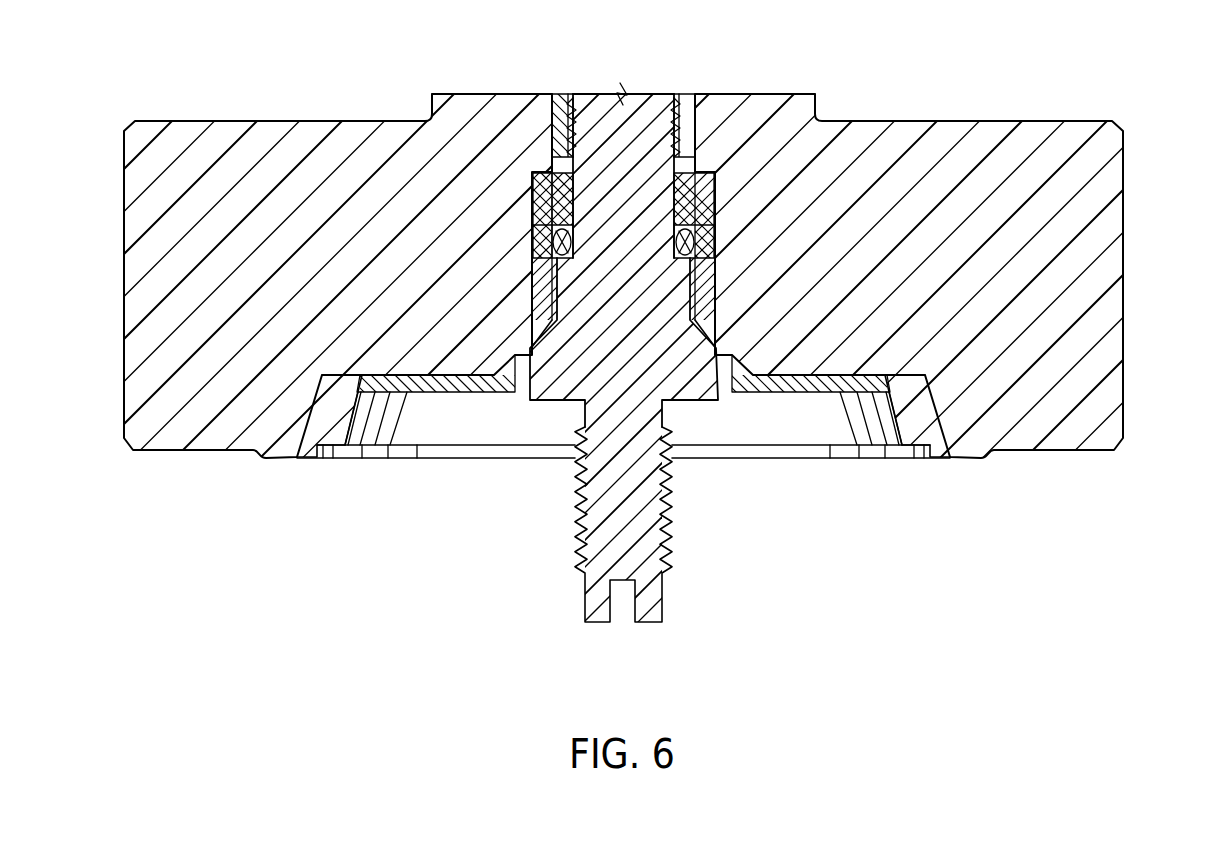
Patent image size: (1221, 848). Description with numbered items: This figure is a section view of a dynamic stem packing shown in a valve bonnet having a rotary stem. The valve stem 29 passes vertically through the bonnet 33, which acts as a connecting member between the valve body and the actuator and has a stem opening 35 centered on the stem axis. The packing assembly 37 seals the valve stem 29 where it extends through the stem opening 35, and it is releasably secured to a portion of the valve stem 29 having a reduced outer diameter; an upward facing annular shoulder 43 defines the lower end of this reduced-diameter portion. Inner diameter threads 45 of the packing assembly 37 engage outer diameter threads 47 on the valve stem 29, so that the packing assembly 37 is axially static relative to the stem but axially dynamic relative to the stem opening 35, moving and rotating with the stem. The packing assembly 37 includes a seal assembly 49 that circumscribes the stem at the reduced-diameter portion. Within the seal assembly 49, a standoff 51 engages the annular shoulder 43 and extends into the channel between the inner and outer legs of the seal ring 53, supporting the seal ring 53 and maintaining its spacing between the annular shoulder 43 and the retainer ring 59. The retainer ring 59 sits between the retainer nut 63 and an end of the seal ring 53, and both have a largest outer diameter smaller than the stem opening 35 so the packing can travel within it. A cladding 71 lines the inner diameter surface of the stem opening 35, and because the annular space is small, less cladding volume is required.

The valve stem 29 is at (668, 287).
The bonnet 33 is at (1085, 178).
The stem opening 35 is at (562, 110).
The packing assembly 37 is at (527, 131).
The annular shoulder 43 is at (700, 217).
The inner diameter threads 45 is at (582, 116).
The outer diameter threads 47 is at (689, 102).
The seal assembly 49 is at (540, 210).
The standoff 51 is at (566, 250).
The seal ring 53 is at (555, 224).
The retainer ring 59 is at (552, 187).
The retainer nut 63 is at (694, 137).
The cladding 71 is at (917, 425).